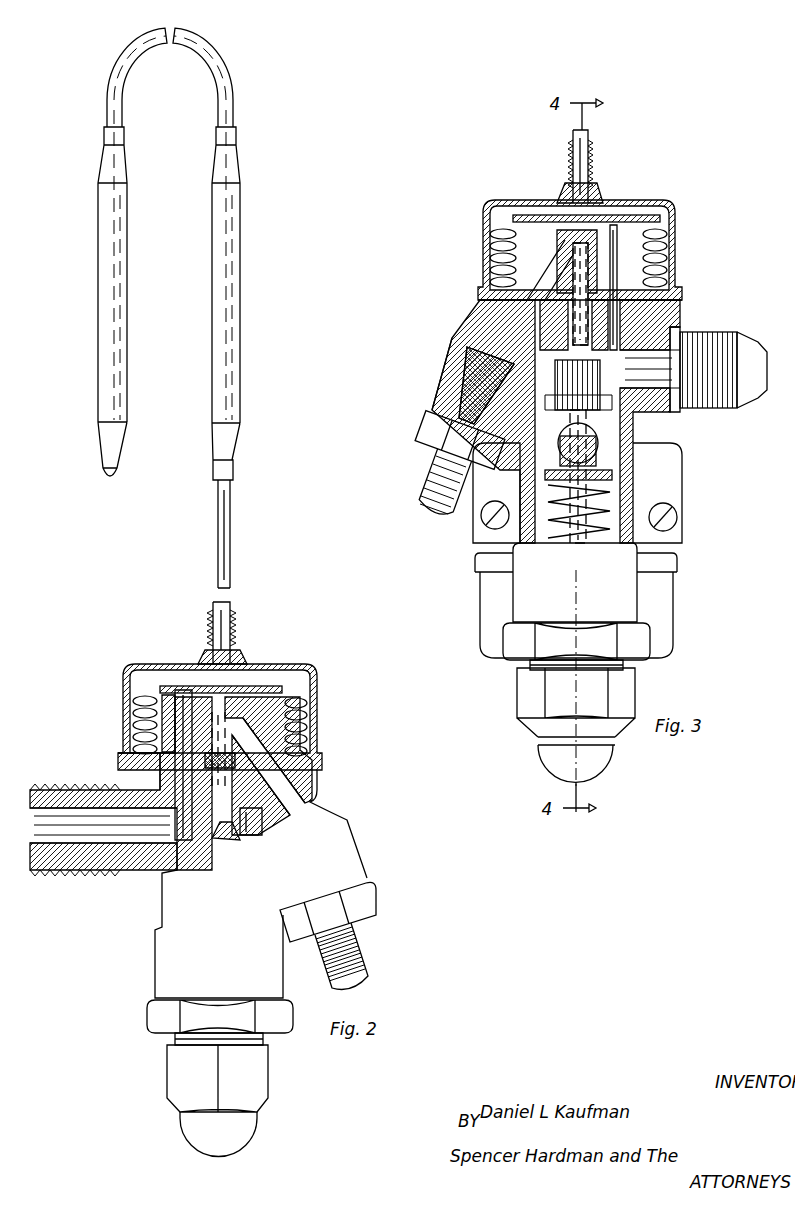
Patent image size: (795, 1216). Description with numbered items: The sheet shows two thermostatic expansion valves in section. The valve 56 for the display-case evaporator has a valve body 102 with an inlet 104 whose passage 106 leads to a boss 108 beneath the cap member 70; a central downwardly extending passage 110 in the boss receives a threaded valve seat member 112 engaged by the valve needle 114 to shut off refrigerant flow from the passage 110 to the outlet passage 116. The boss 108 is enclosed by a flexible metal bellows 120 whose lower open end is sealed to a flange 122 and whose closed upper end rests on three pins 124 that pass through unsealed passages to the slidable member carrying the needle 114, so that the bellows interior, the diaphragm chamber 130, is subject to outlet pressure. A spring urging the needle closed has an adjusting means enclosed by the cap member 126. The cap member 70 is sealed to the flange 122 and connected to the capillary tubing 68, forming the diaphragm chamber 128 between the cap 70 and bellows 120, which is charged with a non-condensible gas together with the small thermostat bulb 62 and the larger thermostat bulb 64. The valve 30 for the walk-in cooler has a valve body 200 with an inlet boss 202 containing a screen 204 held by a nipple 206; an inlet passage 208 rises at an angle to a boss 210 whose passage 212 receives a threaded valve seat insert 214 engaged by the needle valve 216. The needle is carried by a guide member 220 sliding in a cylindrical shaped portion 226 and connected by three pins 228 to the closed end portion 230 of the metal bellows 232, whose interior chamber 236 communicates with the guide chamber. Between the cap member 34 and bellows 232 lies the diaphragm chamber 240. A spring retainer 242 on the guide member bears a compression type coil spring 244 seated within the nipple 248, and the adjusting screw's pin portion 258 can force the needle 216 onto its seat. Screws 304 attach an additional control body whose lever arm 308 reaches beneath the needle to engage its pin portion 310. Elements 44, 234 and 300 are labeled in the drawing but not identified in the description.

In FIG. 3, the valve 30 is at (679, 273).
In FIG. 3, the cap member 34 is at (676, 221).
In FIG. 3, the collar 44 is at (679, 617).
In FIG. 2, the valve 56 is at (162, 894).
In FIG. 2, the thermostat bulb 62 is at (228, 286).
In FIG. 2, the thermostat bulb 64 is at (103, 283).
In FIG. 2, the capillary tubing 68 is at (219, 545).
In FIG. 2, the cap member 70 is at (126, 698).
In FIG. 2, the valve body 102 is at (156, 946).
In FIG. 2, the inlet 104 is at (347, 866).
In FIG. 2, the passage 106 is at (279, 790).
In FIG. 2, the boss 108 is at (262, 703).
In FIG. 2, the passage 110 is at (228, 731).
In FIG. 2, the valve seat member 112 is at (246, 818).
In FIG. 2, the valve needle 114 is at (222, 831).
In FIG. 2, the outlet passage 116 is at (110, 834).
In FIG. 2, the flexible metal bellows 120 is at (295, 712).
In FIG. 2, the flange 122 is at (142, 760).
In FIG. 2, the pins 124 is at (189, 840).
In FIG. 2, the cap member 126 is at (183, 1083).
In FIG. 2, the diaphragm chamber 128 is at (147, 684).
In FIG. 2, the diaphragm chamber 130 is at (272, 738).
In FIG. 3, the valve body 200 is at (632, 463).
In FIG. 3, the inlet boss 202 is at (453, 362).
In FIG. 3, the screen 204 is at (466, 388).
In FIG. 3, the nipple 206 is at (430, 437).
In FIG. 3, the inlet passage 208 is at (524, 320).
In FIG. 3, the boss 210 is at (548, 262).
In FIG. 3, the passage 212 is at (576, 258).
In FIG. 3, the valve seat insert 214 is at (562, 309).
In FIG. 3, the needle valve 216 is at (618, 347).
In FIG. 3, the guide member 220 is at (577, 493).
In FIG. 3, the cylindrical shaped portion 226 is at (628, 488).
In FIG. 3, the pins 228 is at (662, 250).
In FIG. 3, the closed end portion 230 is at (602, 218).
In FIG. 3, the metal bellows 232 is at (648, 233).
In FIG. 3, the piston 234 is at (595, 398).
In FIG. 3, the chamber 236 is at (628, 274).
In FIG. 3, the diaphragm chamber 240 is at (654, 218).
In FIG. 3, the spring retainer 242 is at (608, 477).
In FIG. 3, the compression type coil spring 244 is at (636, 545).
In FIG. 3, the nipple 248 is at (640, 645).
In FIG. 3, the pin portion 258 is at (582, 540).
In FIG. 3, the outlet fitting 300 is at (718, 369).
In FIG. 3, the screws 304 is at (484, 524).
In FIG. 3, the lever arm 308 is at (594, 452).
In FIG. 3, the pin portion 310 is at (590, 431).